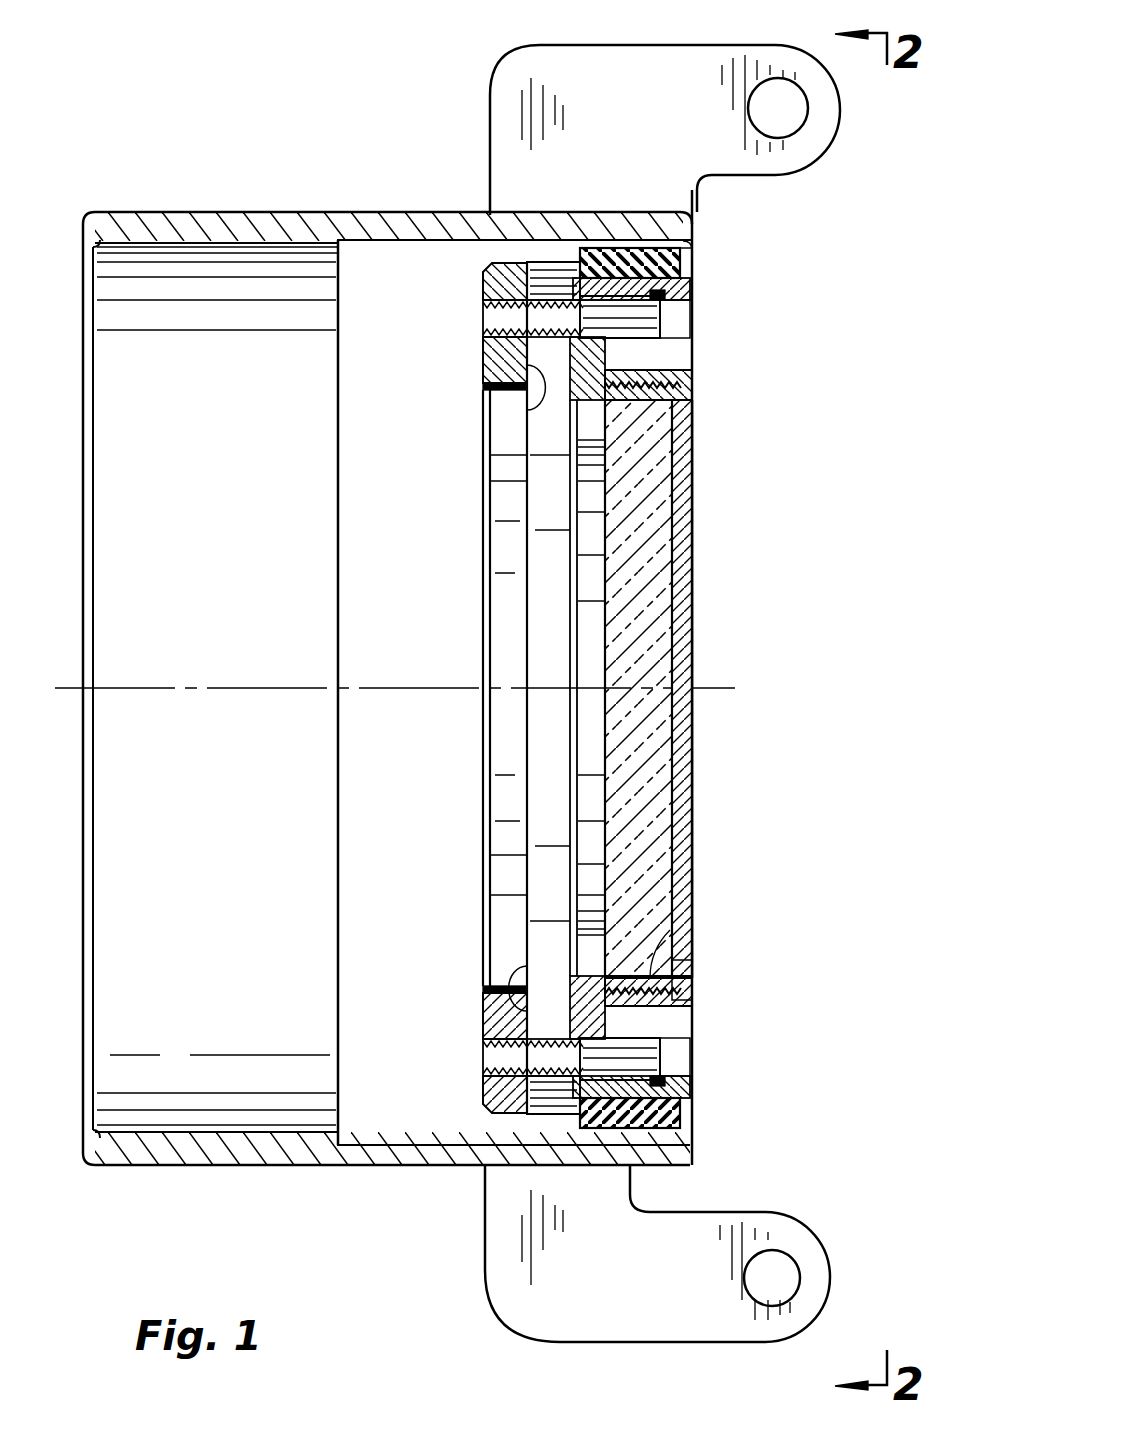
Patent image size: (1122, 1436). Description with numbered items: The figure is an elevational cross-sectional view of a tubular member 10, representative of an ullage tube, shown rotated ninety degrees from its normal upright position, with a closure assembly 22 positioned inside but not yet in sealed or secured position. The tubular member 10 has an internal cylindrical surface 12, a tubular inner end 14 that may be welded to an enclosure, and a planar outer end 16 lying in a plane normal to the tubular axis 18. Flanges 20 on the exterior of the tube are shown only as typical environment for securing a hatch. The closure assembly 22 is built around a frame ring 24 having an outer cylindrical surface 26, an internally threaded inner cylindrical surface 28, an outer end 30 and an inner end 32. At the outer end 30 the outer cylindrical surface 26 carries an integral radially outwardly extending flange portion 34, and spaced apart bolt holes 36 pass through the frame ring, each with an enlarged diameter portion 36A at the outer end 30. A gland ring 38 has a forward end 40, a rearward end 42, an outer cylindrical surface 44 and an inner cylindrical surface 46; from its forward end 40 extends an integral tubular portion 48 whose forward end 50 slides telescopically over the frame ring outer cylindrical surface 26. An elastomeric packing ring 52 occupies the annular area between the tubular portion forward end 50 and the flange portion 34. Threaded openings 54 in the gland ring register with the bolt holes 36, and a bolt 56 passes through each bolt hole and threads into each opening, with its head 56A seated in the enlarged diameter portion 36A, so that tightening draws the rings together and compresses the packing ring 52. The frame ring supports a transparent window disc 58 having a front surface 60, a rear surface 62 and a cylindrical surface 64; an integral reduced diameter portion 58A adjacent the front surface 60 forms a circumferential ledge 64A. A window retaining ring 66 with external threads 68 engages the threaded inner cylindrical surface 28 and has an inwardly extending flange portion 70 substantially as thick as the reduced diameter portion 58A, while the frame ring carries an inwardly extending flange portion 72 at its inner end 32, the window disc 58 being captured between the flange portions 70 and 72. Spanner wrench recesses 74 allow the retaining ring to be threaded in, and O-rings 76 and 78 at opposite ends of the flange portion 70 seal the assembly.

The tubular member 10 is at (290, 212).
The internal cylindrical surface 12 is at (518, 232).
The tubular inner end 14 is at (80, 215).
The outer end 16 is at (697, 230).
The tubular axis 18 is at (162, 685).
The flanges 20 is at (655, 65).
The closure assembly 22 is at (750, 245).
The frame ring 24 is at (692, 355).
The outer cylindrical surface 26 is at (636, 255).
The inner cylindrical surface 28 is at (692, 390).
The outer end 30 is at (698, 262).
The inner end 32 is at (565, 412).
The flange portion 34 is at (702, 255).
The bolt holes 36 is at (483, 365).
The enlarged diameter portion 36A is at (645, 1110).
The gland ring 38 is at (487, 296).
The forward end 40 is at (560, 400).
The rearward end 42 is at (485, 270).
The outer cylindrical surface 44 is at (490, 262).
The inner cylindrical surface 46 is at (482, 392).
The tubular portion 48 is at (556, 260).
The forward end 50 is at (592, 282).
The elastomeric packing ring 52 is at (620, 250).
The threaded openings 54 is at (485, 318).
The bolt 56 is at (662, 332).
The head 56A is at (662, 310).
The window disc 58 is at (660, 625).
The reduced diameter portion 58A is at (694, 568).
The front surface 60 is at (694, 525).
The rear surface 62 is at (600, 740).
The cylindrical surface 64 is at (665, 395).
The circumferential ledge 64A is at (680, 985).
The window retaining ring 66 is at (650, 975).
The external threads 68 is at (580, 1018).
The flange portion 70 is at (680, 995).
The flange portion 72 is at (580, 965).
The spanner wrench recesses 74 is at (655, 1007).
The O-ring 76 is at (680, 965).
The O-ring 78 is at (640, 1065).